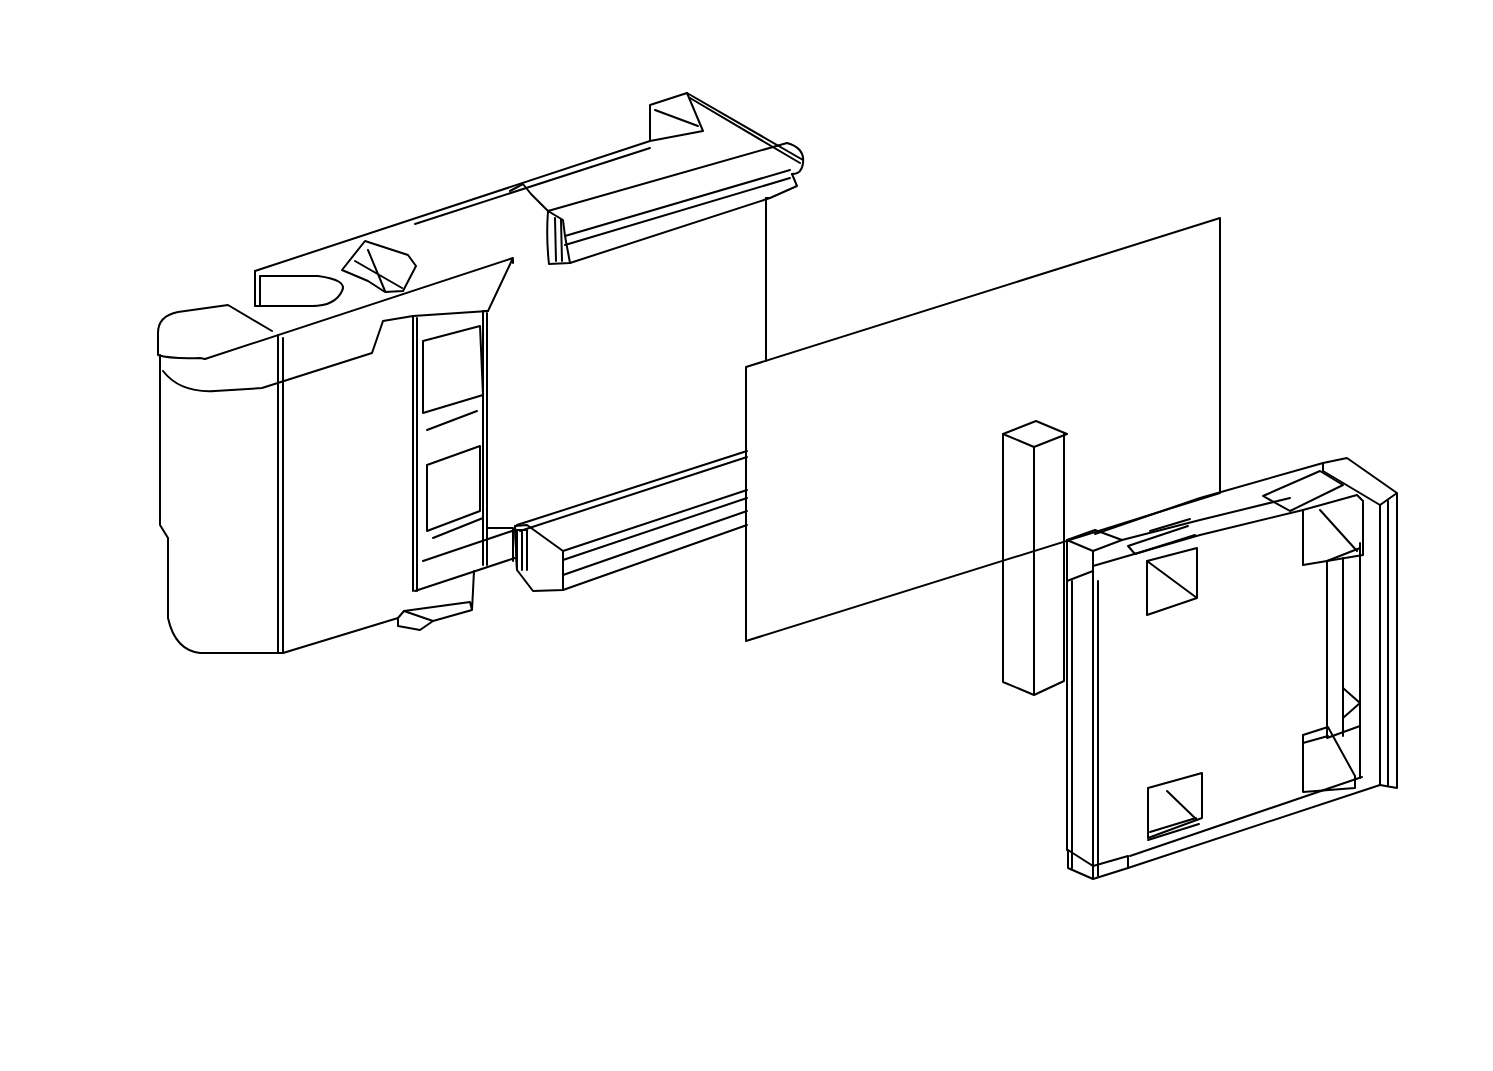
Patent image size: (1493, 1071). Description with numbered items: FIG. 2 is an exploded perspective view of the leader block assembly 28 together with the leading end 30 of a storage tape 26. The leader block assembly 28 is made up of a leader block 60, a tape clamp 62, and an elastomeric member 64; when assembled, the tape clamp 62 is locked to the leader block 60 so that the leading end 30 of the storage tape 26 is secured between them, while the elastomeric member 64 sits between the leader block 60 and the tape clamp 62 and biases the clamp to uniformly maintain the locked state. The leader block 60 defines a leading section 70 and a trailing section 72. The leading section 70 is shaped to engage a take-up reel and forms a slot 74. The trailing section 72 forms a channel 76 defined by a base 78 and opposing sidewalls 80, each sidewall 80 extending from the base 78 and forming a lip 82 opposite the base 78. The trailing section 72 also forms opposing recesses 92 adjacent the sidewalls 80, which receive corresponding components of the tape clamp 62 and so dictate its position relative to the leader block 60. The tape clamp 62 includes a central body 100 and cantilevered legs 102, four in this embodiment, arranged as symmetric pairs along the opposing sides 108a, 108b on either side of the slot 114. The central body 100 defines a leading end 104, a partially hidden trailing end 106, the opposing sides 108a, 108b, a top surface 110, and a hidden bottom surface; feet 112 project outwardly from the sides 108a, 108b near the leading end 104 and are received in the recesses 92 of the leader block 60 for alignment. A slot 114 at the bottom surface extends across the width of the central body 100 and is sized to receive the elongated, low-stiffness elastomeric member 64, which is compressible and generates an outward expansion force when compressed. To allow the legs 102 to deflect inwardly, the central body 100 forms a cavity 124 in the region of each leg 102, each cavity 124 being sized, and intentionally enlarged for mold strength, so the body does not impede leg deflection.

The leader block assembly 28 is at (1248, 109).
The leader block 60 is at (412, 206).
The leading section 70 is at (258, 618).
The trailing section 72 is at (478, 565).
The slot 74 is at (328, 292).
The channel 76 is at (770, 238).
The base 78 is at (748, 296).
The opposing sidewalls 80 is at (735, 148).
The lip 82 is at (620, 243).
The opposing recesses 92 is at (532, 226).
The storage tape 26 is at (987, 285).
The leading end 30 is at (804, 603).
The elastomeric member 64 is at (1018, 661).
The tape clamp 62 is at (1277, 808).
The central body 100 is at (1310, 643).
The cantilevered legs 102 is at (1310, 474).
The leading end 104 is at (1080, 792).
The trailing end 106 is at (1392, 540).
The opposing side 108a is at (1242, 528).
The opposing side 108b is at (1253, 813).
The top surface 110 is at (1113, 712).
The feet 112 is at (1094, 548).
The slot 114 is at (1190, 521).
The cavity 124 is at (1177, 607).